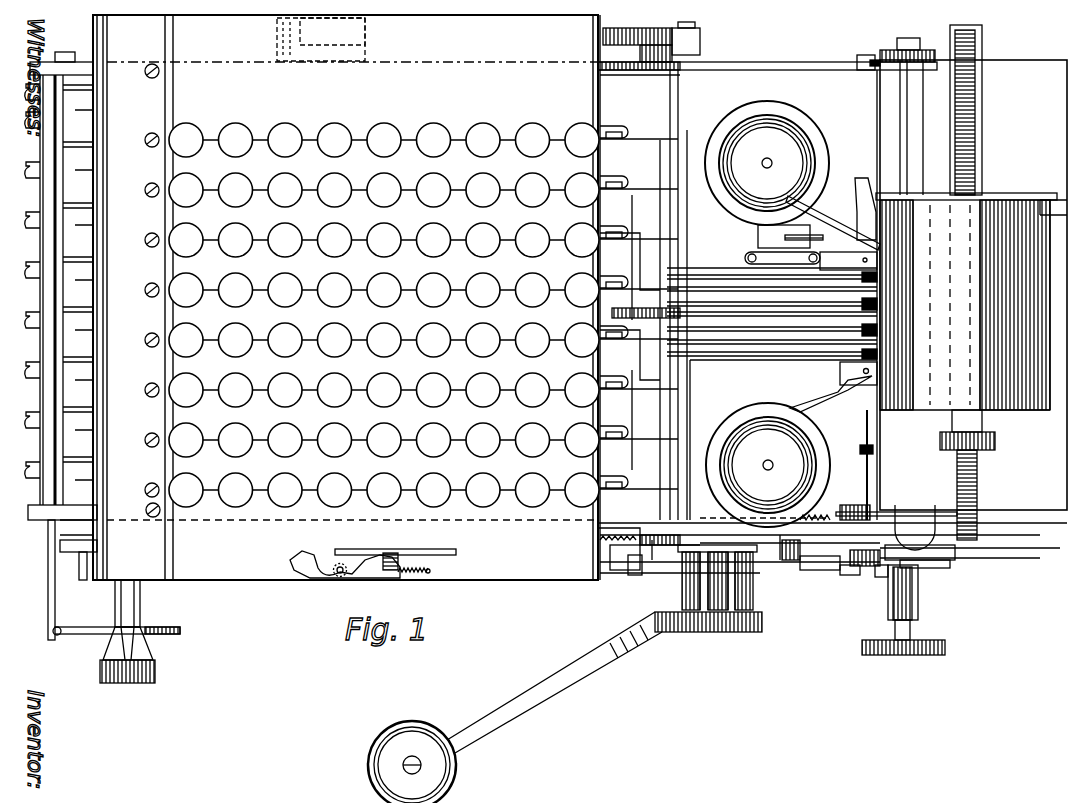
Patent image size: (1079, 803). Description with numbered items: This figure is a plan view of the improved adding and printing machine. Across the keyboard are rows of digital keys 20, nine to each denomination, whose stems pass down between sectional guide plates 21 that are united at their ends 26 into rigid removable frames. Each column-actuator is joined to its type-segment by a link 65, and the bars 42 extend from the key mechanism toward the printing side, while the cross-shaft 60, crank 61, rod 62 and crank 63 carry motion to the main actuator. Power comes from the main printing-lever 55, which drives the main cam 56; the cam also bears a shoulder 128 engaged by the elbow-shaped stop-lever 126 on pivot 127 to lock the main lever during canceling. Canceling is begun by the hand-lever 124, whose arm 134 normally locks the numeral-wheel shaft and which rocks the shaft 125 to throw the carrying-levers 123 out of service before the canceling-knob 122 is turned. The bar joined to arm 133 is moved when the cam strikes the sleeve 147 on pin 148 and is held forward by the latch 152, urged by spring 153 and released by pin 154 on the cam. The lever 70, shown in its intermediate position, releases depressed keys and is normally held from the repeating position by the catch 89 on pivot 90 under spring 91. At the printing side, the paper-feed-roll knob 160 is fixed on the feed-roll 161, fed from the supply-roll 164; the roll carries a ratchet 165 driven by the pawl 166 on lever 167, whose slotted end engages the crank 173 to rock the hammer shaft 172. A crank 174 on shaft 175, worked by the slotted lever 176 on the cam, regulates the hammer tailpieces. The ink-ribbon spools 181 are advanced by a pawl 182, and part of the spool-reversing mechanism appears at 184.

The digital keys 20 is at (301, 241).
The guide plates 21 is at (410, 187).
The united ends of guide plates 26 is at (601, 97).
The type bars 42 is at (766, 354).
The main printing-lever 55 is at (503, 718).
The main cam 56 is at (757, 546).
The cross-shaft 60 is at (701, 61).
The crank 61 is at (701, 46).
The rod 62 is at (634, 44).
The crank 63 is at (335, 62).
The link 65 is at (622, 194).
The lever 70 is at (395, 553).
The catch 89 is at (304, 577).
The pivot 90 is at (341, 578).
The spring 91 is at (410, 581).
The canceling-knob 122 is at (157, 671).
The carrying-levers 123 is at (33, 180).
The hand-lever 124 is at (96, 640).
The shaft 125 is at (50, 251).
The stop-lever 126 is at (688, 550).
The pivot 127 is at (655, 547).
The shoulder 128 is at (748, 562).
The arm 133 is at (78, 544).
The arm 134 is at (83, 558).
The sleeve 147 is at (635, 562).
The pin 148 is at (640, 562).
The latch 152 is at (782, 536).
The spring 153 is at (640, 530).
The pin 154 is at (852, 576).
The paper-feed-roll knob 160 is at (905, 658).
The feed-roll 161 is at (918, 601).
The supply-roll 164 is at (883, 414).
The ratchet 165 is at (888, 585).
The pawl 166 is at (822, 572).
The lever 167 is at (836, 515).
The shaft 172 is at (900, 513).
The crank 173 is at (917, 540).
The crank 174 is at (926, 568).
The shaft 175 is at (945, 571).
The slotted lever 176 is at (878, 567).
The ink-ribbon spools 181 is at (810, 126).
The pawl 182 is at (835, 512).
The spool-reversing mechanism 184 is at (808, 246).